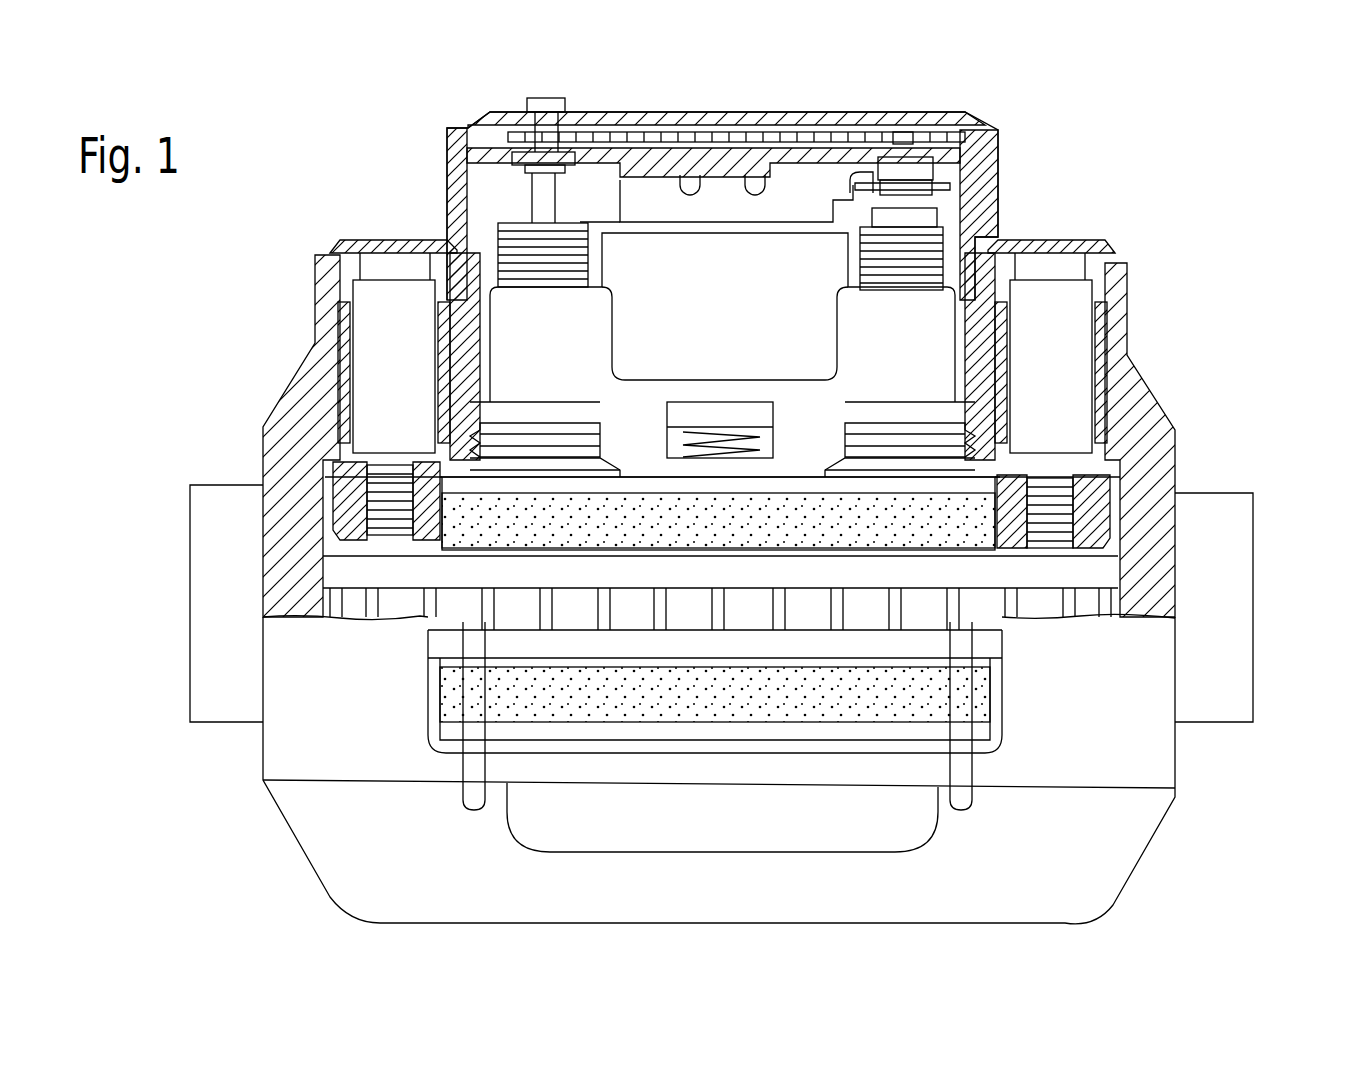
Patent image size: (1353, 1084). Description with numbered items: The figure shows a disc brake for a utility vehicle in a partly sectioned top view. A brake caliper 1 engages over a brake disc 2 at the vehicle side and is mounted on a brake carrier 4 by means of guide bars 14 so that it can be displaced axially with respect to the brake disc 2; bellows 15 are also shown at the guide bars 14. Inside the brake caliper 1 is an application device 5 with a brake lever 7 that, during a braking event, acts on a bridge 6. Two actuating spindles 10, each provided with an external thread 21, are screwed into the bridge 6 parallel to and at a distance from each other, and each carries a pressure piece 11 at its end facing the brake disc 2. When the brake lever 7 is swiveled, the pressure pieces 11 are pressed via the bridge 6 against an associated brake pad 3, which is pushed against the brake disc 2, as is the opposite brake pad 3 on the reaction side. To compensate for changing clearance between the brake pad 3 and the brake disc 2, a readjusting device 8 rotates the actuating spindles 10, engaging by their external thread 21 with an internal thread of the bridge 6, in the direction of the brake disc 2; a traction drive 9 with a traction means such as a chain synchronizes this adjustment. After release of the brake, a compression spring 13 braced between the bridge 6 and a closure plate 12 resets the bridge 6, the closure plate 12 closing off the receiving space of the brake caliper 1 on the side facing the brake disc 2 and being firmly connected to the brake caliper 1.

The brake caliper 1 is at (1147, 453).
The brake disc 2 is at (1092, 582).
The brake pad 3 is at (1012, 452).
The brake carrier 4 is at (1228, 625).
The application device 5 is at (605, 195).
The bridge 6 is at (907, 315).
The brake lever 7 is at (803, 200).
The readjusting device 8 is at (647, 132).
The traction drive 9 is at (740, 143).
The actuating spindle 10 is at (480, 217).
The pressure piece 11 is at (515, 466).
The closure plate 12 is at (647, 445).
The compression spring 13 is at (715, 445).
The guide bar 14 is at (387, 305).
The bellows 15 is at (477, 430).
The external thread 21 is at (530, 257).